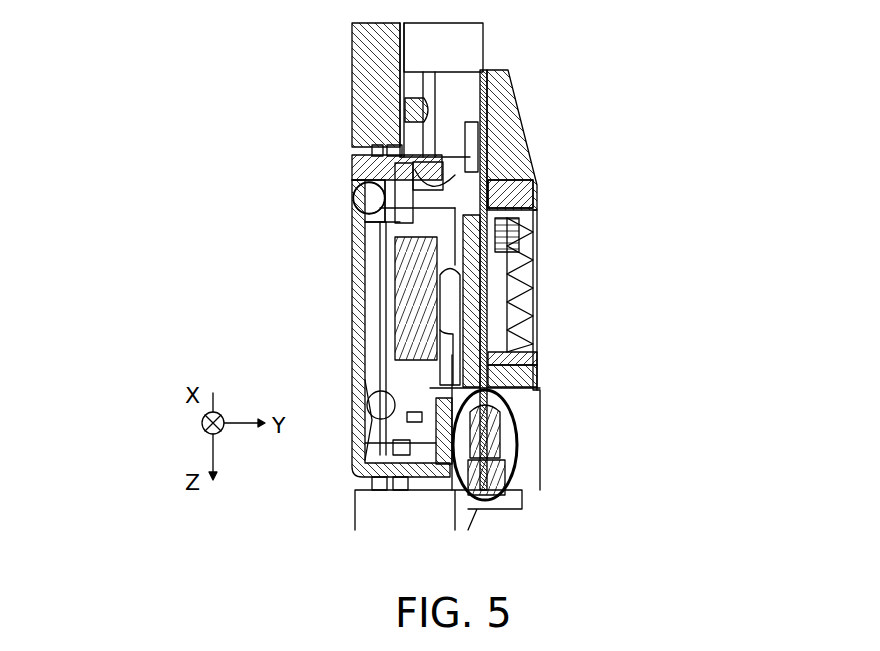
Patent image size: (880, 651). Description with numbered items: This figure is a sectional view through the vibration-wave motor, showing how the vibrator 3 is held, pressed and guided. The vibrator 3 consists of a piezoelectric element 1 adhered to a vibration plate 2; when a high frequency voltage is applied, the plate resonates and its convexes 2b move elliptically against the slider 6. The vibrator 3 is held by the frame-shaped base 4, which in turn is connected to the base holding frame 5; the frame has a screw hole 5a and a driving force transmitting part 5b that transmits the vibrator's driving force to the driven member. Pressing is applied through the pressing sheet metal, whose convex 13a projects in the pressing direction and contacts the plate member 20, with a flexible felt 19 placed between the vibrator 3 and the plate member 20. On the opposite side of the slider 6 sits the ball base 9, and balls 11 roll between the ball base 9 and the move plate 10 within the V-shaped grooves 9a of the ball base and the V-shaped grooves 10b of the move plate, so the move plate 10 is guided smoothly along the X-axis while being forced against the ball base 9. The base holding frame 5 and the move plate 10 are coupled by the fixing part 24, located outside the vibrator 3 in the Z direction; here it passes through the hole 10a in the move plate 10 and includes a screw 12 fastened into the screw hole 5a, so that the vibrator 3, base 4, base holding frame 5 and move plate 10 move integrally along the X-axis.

The piezoelectric element 1 is at (537, 380).
The vibration plate 2 is at (533, 407).
The vibrator 3 is at (584, 392).
The convex 2b is at (347, 252).
The base 4 is at (527, 190).
The base holding frame 5 is at (530, 432).
The screw hole 5a is at (525, 443).
The driving force transmitting part 5b is at (424, 442).
The slider 6 is at (408, 297).
The ball base 9 is at (377, 446).
The V-shaped groove 9a is at (373, 401).
The move plate 10 is at (352, 330).
The hole 10a is at (522, 483).
The V-shaped groove 10b is at (345, 198).
The ball 11 is at (354, 180).
The screw 12 is at (522, 497).
The convex 13a is at (527, 283).
The flexible felt 19 is at (527, 258).
The plate member 20 is at (530, 210).
The fixing part 24 is at (527, 463).